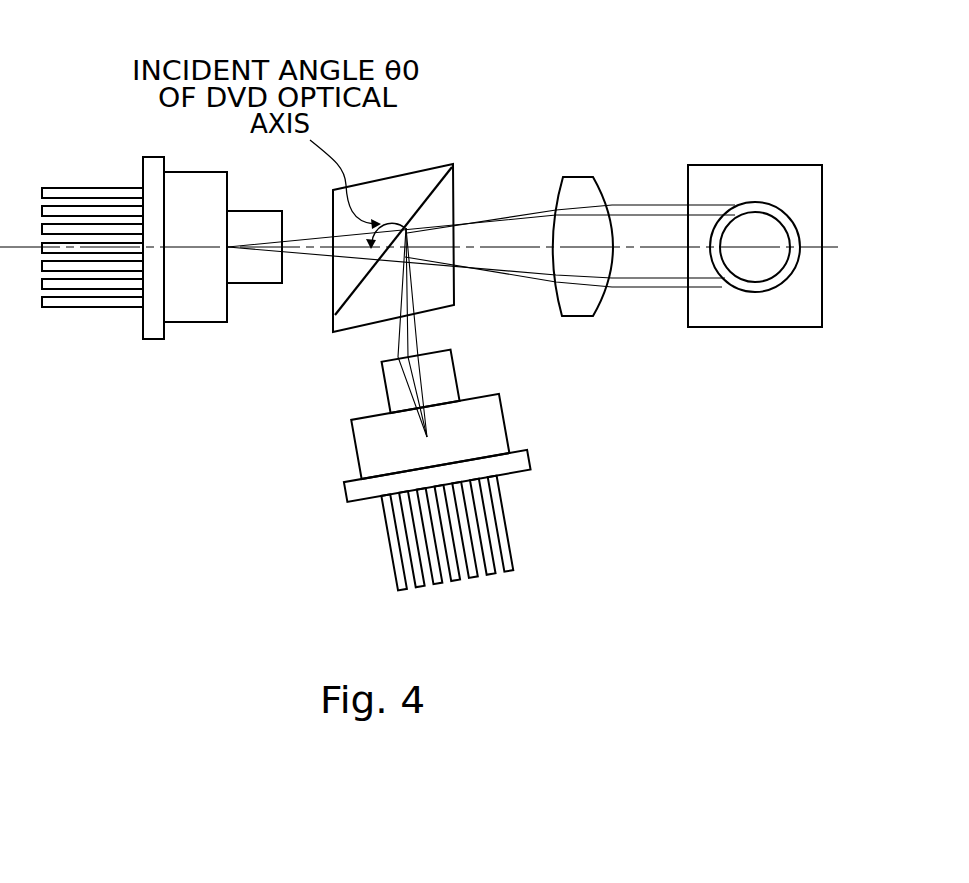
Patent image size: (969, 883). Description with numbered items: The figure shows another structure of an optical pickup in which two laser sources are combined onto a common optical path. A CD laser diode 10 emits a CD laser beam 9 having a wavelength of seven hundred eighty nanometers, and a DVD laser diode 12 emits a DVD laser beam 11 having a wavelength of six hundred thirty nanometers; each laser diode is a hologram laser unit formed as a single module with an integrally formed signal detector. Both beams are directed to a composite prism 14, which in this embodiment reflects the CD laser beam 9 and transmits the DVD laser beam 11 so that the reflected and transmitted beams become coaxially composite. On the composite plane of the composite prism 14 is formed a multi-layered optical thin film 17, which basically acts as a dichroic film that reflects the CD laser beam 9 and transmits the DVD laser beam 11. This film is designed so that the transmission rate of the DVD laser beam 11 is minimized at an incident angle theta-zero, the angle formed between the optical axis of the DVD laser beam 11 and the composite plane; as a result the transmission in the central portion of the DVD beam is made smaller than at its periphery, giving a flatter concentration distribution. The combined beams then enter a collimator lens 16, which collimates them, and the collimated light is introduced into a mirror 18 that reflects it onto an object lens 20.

The CD laser beam 9 is at (415, 323).
The CD laser diode 10 is at (352, 435).
The DVD laser beam 11 is at (293, 239).
The DVD laser diode 12 is at (153, 157).
The composite prism 14 is at (428, 169).
The collimator lens 16 is at (576, 177).
The multi-layered optical thin film 17 is at (444, 190).
The mirror 18 is at (822, 189).
The object lens 20 is at (790, 273).